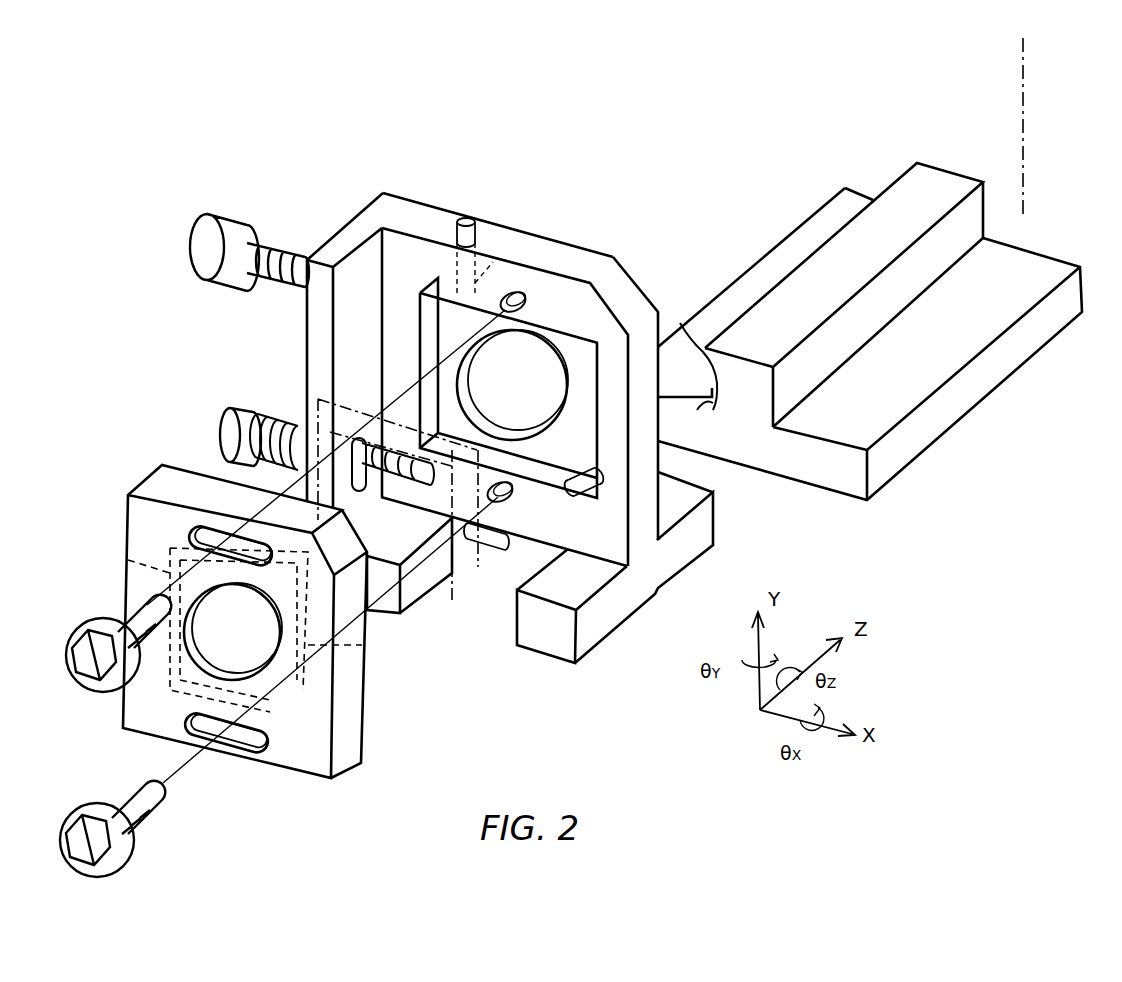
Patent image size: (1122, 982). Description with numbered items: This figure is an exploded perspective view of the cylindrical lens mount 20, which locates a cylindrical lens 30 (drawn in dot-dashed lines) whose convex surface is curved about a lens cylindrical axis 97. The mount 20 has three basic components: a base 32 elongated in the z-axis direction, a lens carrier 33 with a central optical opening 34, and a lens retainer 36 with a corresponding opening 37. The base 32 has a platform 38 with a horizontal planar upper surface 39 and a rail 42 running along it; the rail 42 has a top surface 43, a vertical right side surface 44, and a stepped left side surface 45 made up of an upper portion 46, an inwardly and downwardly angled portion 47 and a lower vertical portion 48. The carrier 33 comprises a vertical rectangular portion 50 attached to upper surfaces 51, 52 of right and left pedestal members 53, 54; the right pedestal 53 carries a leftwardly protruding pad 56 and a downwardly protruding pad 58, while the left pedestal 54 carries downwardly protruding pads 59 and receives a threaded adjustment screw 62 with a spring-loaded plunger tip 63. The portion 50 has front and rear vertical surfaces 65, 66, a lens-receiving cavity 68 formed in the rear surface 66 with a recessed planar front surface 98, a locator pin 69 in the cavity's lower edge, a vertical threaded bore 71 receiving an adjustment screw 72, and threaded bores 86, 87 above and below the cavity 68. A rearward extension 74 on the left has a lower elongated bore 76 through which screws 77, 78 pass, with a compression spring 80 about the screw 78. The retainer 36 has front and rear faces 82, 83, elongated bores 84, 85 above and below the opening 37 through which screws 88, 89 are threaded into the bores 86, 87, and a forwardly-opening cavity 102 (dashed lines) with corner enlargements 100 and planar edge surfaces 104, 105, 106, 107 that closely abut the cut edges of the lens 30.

The mount 20 is at (540, 150).
The cylindrical lens 30 is at (463, 607).
The base 32 is at (1033, 240).
The lens carrier 33 is at (608, 244).
The central optical opening 34 is at (512, 385).
The lens retainer 36 is at (148, 470).
The opening 37 is at (233, 631).
The platform 38 is at (1000, 372).
The upper surface 39 is at (763, 246).
The rail 42 is at (932, 182).
The top surface 43 is at (820, 276).
The vertical right side surface 44 is at (855, 336).
The stepped left side surface 45 is at (733, 317).
The upper portion 46 is at (690, 334).
The angled portion 47 is at (703, 373).
The lower vertical portion 48 is at (705, 404).
The vertical rectangular portion 50 is at (607, 262).
The upper surface 51 is at (617, 577).
The upper surface 52 is at (504, 531).
The right pedestal member 53 is at (700, 540).
The left pedestal member 54 is at (390, 616).
The front leftwardly protruding rectangular pad 56 is at (517, 592).
The central downwardly protruding rectangular pad 58 is at (640, 616).
The downwardly protruding rectangular pad 59 is at (427, 597).
The threaded adjustment screw 62 is at (505, 548).
The spring-loaded plunger tip 63 is at (512, 508).
The front vertical surface 65 is at (438, 198).
The rear vertical surface 66 is at (420, 262).
The lens-receiving cavity 68 is at (553, 338).
The locator pin 69 is at (575, 497).
The threaded bore 71 is at (482, 264).
The threaded adjustment screw 72 is at (476, 222).
The rectangular rearward extension 74 is at (342, 238).
The lower lateral bore 76 is at (358, 490).
The threaded screw 77 is at (250, 245).
The threaded screw 78 is at (250, 408).
The compression spring 80 is at (290, 420).
The front planar vertical face 82 is at (365, 748).
The rear planar vertical face 83 is at (303, 765).
The bore 84 is at (190, 534).
The bore 85 is at (237, 745).
The threaded bore 86 is at (518, 292).
The threaded bore 87 is at (525, 506).
The screw 88 is at (120, 615).
The screw 89 is at (118, 800).
The lens cylindrical axis 97 is at (1034, 104).
The front surface of cavity 98 is at (524, 387).
The enlargements 100 is at (372, 695).
The forwardly-opening cavity 102 is at (197, 695).
The planar edge surface 104 is at (284, 548).
The planar edge surface 105 is at (292, 700).
The planar edge surface 106 is at (363, 618).
The planar edge surface 107 is at (130, 560).